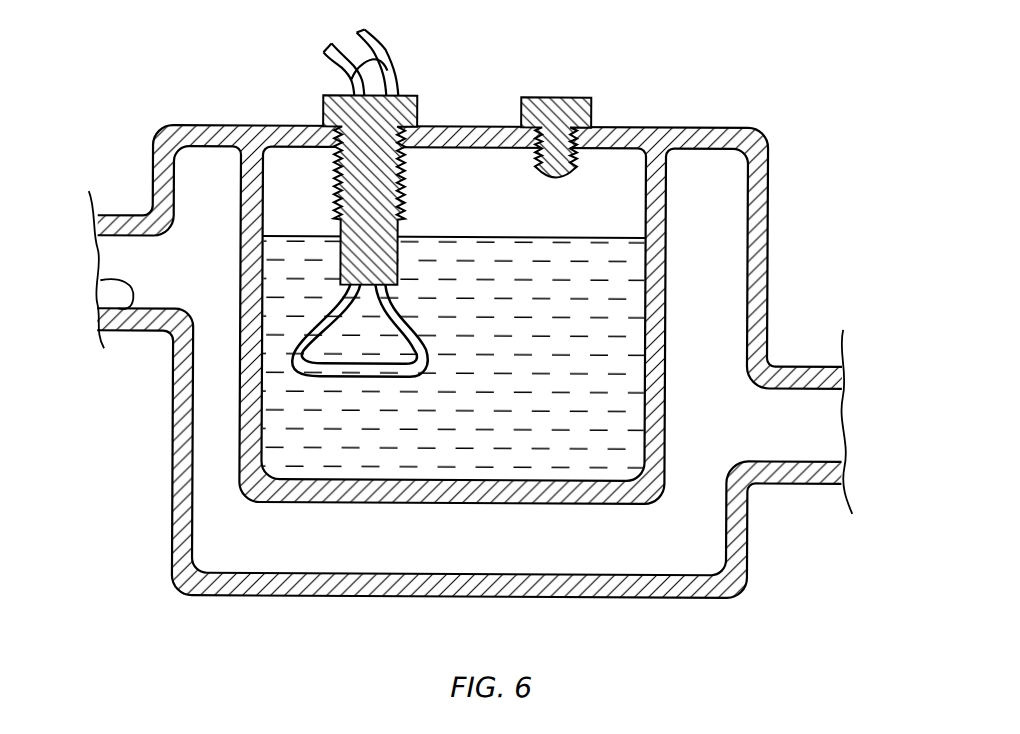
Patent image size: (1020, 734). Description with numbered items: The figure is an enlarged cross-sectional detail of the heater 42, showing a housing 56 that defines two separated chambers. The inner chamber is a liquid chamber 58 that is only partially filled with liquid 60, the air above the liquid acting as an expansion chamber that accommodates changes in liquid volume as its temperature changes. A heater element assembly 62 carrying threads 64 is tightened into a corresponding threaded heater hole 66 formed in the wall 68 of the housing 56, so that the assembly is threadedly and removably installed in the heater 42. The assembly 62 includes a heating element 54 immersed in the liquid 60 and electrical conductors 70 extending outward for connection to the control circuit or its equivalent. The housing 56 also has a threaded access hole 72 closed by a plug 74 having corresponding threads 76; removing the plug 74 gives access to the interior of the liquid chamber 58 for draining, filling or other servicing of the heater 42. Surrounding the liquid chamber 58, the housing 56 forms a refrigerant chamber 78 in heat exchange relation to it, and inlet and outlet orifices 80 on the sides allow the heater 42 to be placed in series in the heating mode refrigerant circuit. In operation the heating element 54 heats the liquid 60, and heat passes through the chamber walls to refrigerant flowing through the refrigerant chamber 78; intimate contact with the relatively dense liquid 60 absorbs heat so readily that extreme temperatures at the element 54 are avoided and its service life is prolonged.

The heater 42 is at (475, 309).
The heating element 54 is at (420, 340).
The housing 56 is at (647, 127).
The liquid chamber 58 is at (498, 202).
The liquid 60 is at (585, 236).
The heater element assembly 62 is at (420, 78).
The threads 64 is at (332, 175).
The threaded heater hole 66 is at (412, 152).
The wall 68 is at (487, 127).
The electrical conductors 70 is at (350, 76).
The threaded access hole 72 is at (580, 152).
The plug 74 is at (560, 97).
The threads 76 is at (537, 155).
The refrigerant chamber 78 is at (438, 553).
The inlet and outlet orifices 80 is at (100, 282).